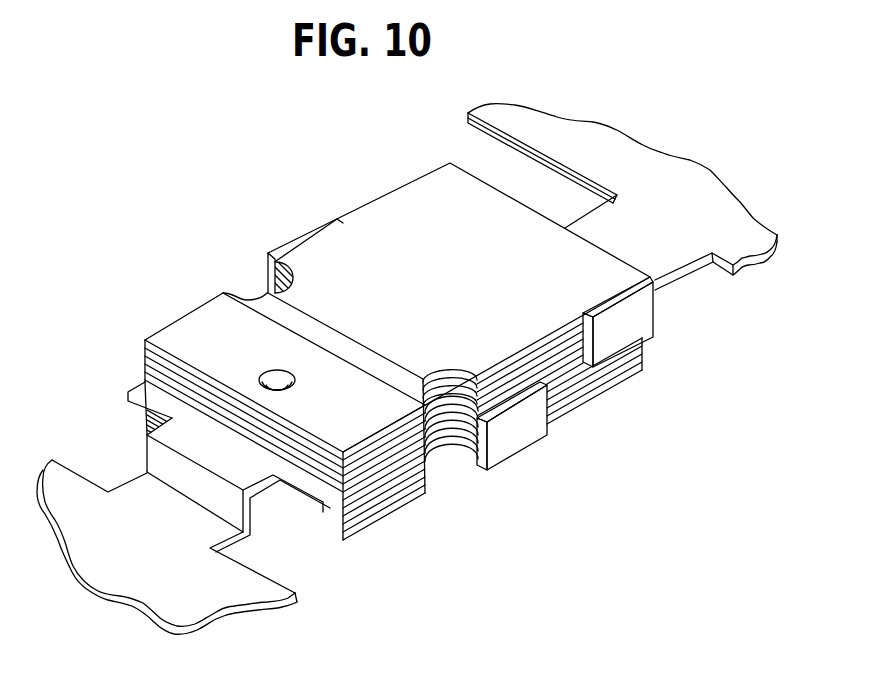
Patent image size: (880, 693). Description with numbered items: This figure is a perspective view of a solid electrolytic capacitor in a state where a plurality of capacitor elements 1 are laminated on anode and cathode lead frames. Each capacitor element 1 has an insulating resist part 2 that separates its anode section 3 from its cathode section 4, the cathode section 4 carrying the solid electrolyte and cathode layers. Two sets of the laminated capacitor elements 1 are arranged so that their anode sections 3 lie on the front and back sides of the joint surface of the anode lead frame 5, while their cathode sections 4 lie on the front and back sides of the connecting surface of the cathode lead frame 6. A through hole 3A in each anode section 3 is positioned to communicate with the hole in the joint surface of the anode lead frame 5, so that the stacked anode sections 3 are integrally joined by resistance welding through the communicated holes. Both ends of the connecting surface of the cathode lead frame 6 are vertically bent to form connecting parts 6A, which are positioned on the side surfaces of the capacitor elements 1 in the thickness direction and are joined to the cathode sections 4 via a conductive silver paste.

The capacitor element 1 is at (600, 397).
The insulating resist part 2 is at (275, 312).
The anode section 3 is at (226, 344).
The through hole 3A is at (265, 377).
The cathode section 4 is at (412, 232).
The anode lead frame 5 is at (141, 497).
The cathode lead frame 6 is at (672, 215).
The connecting part 6A is at (637, 318).